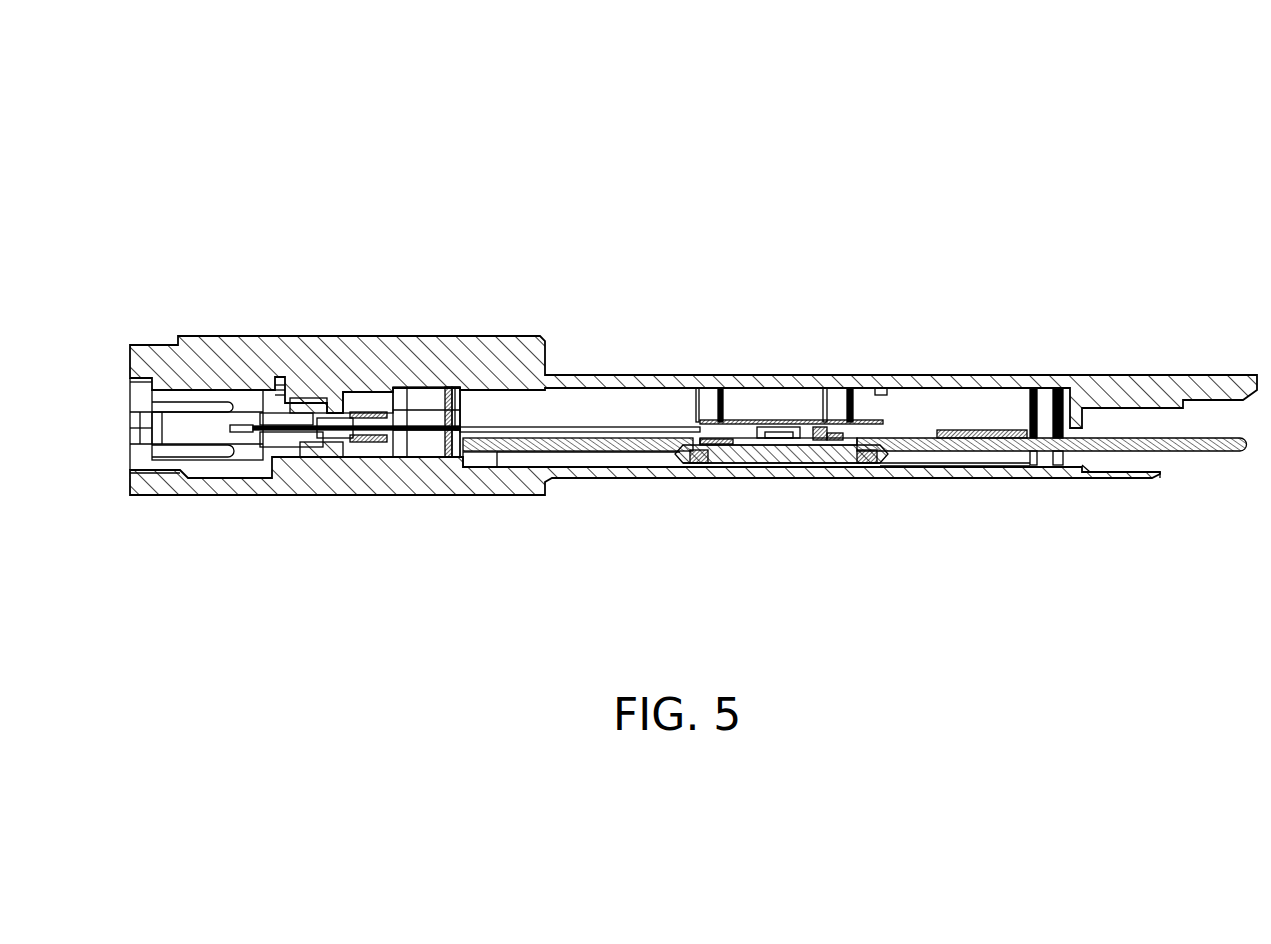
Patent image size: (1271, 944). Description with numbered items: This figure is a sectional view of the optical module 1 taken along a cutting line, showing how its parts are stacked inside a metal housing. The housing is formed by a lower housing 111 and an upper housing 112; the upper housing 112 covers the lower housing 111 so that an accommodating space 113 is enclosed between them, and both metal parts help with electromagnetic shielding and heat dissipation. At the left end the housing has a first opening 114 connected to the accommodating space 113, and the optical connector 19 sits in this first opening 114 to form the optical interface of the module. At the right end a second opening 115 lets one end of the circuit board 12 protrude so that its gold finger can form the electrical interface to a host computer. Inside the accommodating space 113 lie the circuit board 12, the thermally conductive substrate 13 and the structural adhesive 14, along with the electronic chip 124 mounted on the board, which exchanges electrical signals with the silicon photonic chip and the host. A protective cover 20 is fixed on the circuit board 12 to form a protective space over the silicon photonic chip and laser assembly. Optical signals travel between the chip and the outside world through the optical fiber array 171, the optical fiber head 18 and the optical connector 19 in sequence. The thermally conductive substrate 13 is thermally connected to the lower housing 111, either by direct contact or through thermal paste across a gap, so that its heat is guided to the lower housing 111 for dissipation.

The optical module 1 is at (60, 86).
The circuit board 12 is at (635, 451).
The thermally conductive substrate 13 is at (792, 454).
The structural adhesive 14 is at (873, 464).
The optical fiber head 18 is at (357, 456).
The optical connector 19 is at (230, 470).
The protective cover 20 is at (783, 424).
The lower housing 111 is at (410, 479).
The upper housing 112 is at (400, 345).
The accommodating space 113 is at (676, 405).
The first opening 114 is at (126, 408).
The second opening 115 is at (1160, 460).
The electronic chip 124 is at (972, 430).
The optical fiber array 171 is at (520, 432).